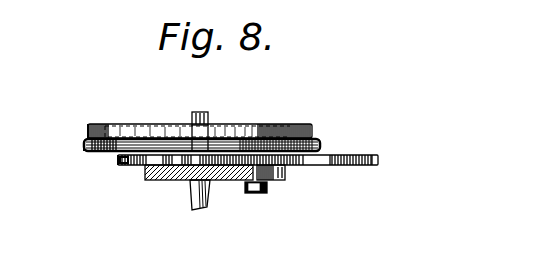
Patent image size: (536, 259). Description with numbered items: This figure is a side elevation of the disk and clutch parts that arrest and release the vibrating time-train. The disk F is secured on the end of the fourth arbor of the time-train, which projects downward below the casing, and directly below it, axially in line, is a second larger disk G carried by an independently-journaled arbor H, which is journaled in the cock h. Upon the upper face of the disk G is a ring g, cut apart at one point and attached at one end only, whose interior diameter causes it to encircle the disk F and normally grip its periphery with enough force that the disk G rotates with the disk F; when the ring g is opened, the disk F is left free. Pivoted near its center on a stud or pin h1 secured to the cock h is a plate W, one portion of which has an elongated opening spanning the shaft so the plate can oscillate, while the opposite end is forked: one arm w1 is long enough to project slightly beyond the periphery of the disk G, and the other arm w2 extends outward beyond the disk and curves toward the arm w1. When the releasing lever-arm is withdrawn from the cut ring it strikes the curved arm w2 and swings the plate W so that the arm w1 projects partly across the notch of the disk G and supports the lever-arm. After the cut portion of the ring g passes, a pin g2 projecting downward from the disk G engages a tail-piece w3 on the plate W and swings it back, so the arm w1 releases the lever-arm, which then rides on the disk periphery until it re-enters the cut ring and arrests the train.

The disk F is at (118, 137).
The arbor H is at (209, 118).
The ring g is at (88, 124).
The disk G is at (85, 148).
The tail-piece w3 is at (118, 158).
The arm w1 is at (316, 165).
The arm w2 is at (379, 158).
The pin g2 is at (141, 164).
The plate W is at (172, 181).
The cock h is at (229, 182).
The stud or pin h1 is at (277, 185).